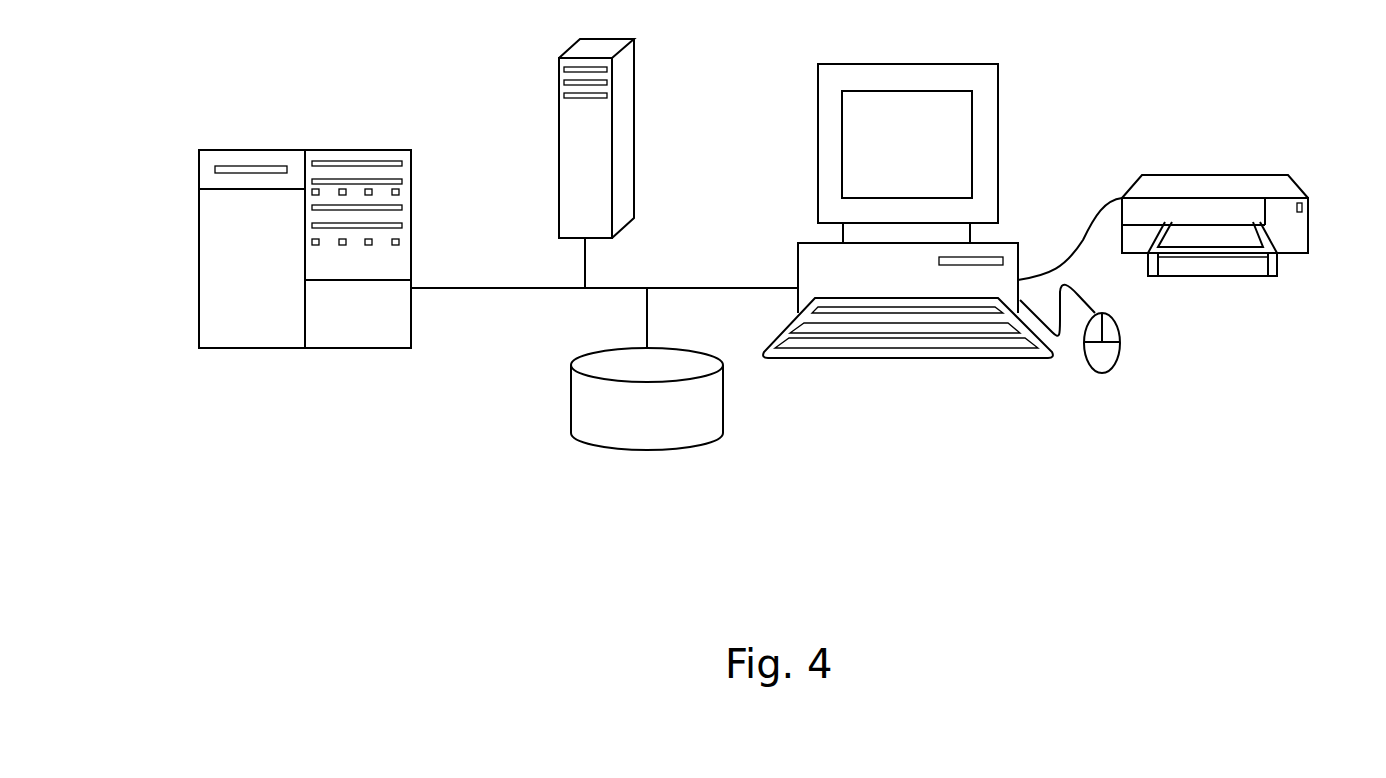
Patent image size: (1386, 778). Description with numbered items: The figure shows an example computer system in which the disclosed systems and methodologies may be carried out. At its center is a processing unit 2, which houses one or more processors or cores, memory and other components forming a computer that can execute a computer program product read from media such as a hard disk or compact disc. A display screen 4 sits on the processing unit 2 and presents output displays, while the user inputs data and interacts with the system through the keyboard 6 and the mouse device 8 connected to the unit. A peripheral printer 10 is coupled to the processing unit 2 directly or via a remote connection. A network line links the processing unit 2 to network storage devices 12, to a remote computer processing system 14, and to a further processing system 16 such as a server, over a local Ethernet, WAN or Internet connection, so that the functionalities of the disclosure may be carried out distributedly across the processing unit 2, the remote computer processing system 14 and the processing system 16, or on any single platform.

The processing unit 2 is at (798, 268).
The display screen 4 is at (998, 138).
The keyboard 6 is at (963, 358).
The mouse device 8 is at (1120, 357).
The printer 10 is at (1213, 175).
The network storage devices 12 is at (663, 448).
The remote computer processing system 14 is at (634, 127).
The processing system 16 is at (349, 150).